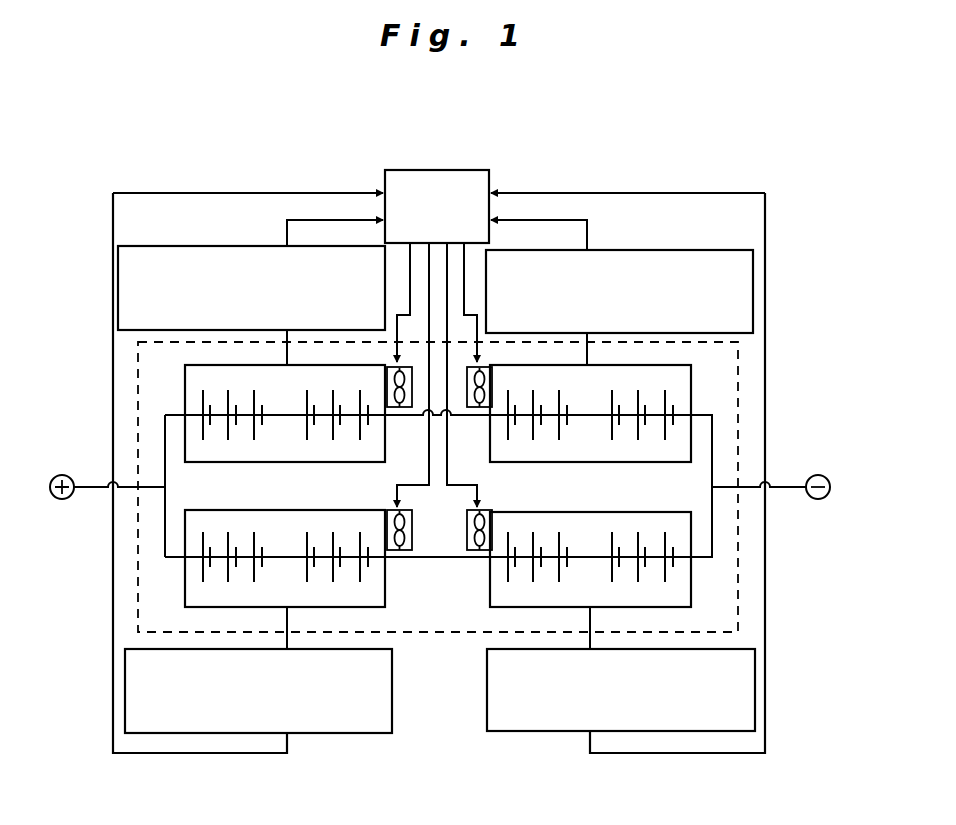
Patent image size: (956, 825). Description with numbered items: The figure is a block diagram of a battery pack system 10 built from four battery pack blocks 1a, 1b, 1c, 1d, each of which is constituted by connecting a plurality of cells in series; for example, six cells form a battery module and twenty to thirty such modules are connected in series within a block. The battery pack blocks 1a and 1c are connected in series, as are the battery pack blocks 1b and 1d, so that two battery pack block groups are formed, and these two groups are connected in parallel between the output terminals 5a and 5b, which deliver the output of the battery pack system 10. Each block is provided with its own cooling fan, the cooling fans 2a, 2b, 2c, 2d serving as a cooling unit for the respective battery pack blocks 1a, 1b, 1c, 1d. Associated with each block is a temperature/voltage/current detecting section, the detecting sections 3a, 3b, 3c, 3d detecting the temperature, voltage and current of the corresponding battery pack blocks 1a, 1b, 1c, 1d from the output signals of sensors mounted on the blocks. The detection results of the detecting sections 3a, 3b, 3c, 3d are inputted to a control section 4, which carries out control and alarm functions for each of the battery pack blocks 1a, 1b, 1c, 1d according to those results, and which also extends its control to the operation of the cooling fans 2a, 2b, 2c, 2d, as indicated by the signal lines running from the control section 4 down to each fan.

The battery pack system 10 is at (283, 186).
The control section 4 is at (455, 170).
The temperature/voltage/current detecting section 3a is at (196, 247).
The temperature/voltage/current detecting section 3b is at (325, 735).
The temperature/voltage/current detecting section 3c is at (666, 250).
The temperature/voltage/current detecting section 3d is at (517, 733).
The battery pack block 1a is at (215, 463).
The battery pack block 1b is at (288, 509).
The battery pack block 1c is at (538, 463).
The battery pack block 1d is at (608, 509).
The cooling fan 2a is at (399, 408).
The cooling fan 2b is at (399, 553).
The cooling fan 2c is at (479, 408).
The cooling fan 2d is at (479, 553).
The output terminal 5a is at (62, 500).
The output terminal 5b is at (818, 500).